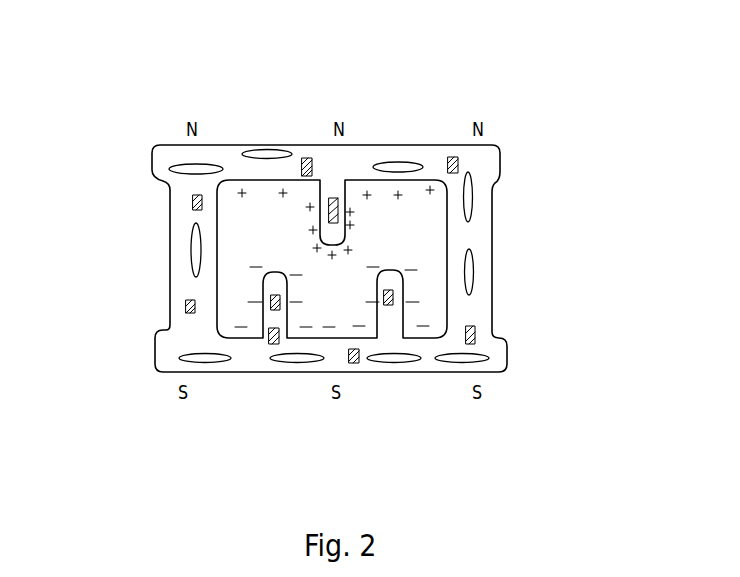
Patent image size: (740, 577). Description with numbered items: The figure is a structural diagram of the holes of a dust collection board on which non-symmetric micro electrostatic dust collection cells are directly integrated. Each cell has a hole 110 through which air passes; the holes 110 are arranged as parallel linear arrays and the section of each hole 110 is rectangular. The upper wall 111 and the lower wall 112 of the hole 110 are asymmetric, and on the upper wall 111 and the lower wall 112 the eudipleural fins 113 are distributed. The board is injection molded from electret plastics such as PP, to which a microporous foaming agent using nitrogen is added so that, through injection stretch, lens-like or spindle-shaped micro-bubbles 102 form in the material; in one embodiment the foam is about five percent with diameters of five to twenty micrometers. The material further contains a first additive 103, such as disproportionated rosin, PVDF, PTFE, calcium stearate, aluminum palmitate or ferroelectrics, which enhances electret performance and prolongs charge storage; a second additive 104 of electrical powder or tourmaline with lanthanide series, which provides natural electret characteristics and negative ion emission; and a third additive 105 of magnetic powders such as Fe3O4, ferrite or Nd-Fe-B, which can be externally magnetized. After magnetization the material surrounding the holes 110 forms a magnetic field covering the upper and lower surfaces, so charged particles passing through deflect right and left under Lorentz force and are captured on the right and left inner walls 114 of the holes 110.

The micro-bubbles 102 is at (465, 195).
The first additive 103 is at (493, 222).
The second additive 104 is at (463, 312).
The third additive 105 is at (470, 335).
The hole 110 is at (415, 248).
The upper wall 111 is at (293, 158).
The lower wall 112 is at (327, 338).
The eudipleural fins 113 is at (333, 235).
The right and left inner walls 114 is at (215, 245).